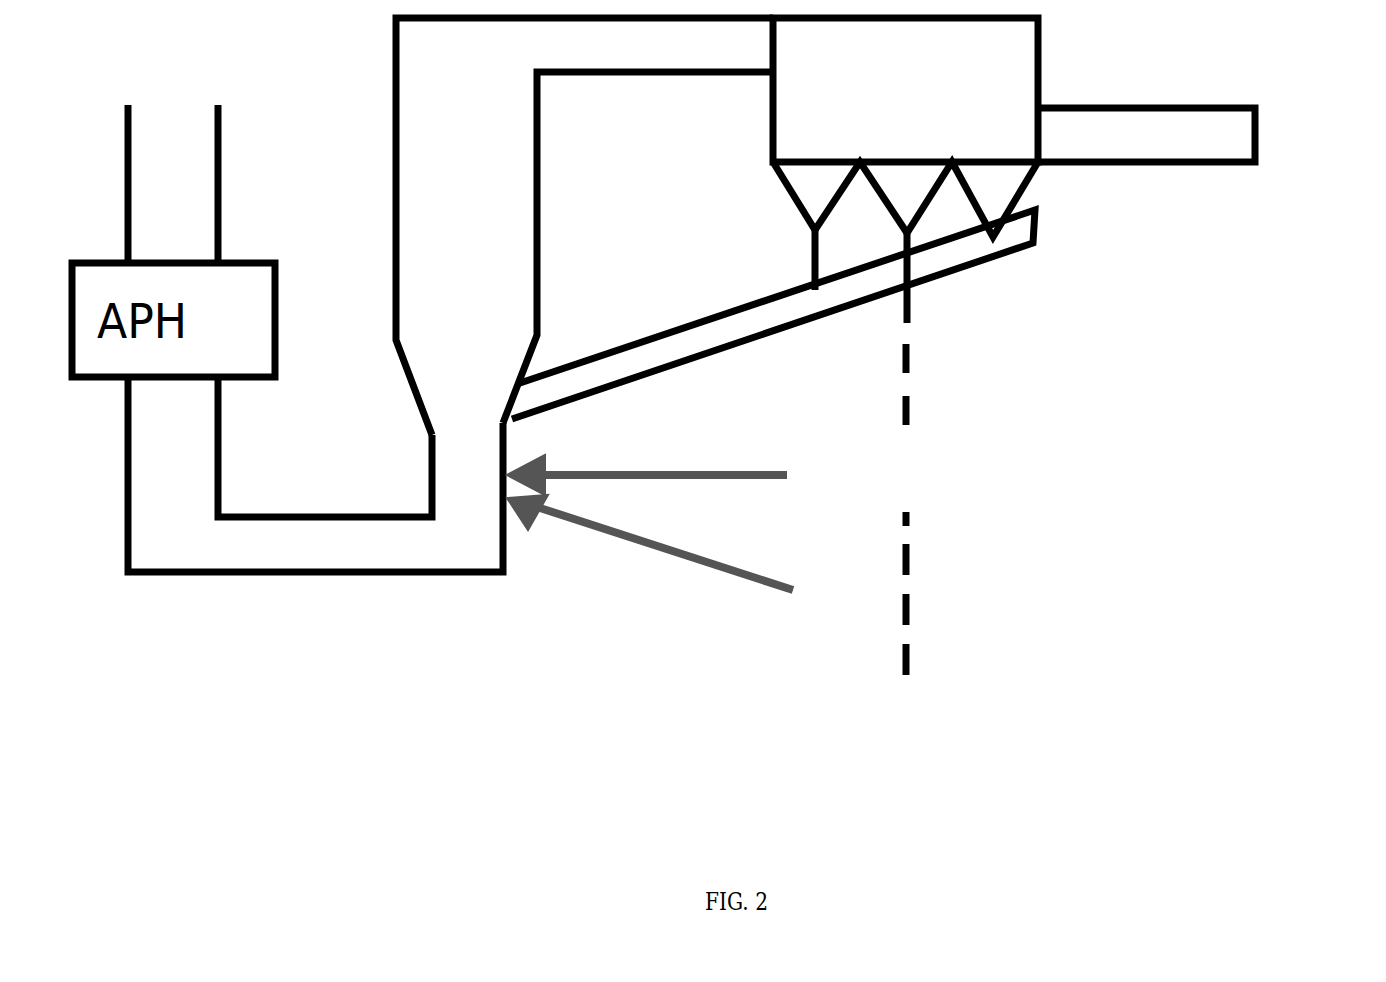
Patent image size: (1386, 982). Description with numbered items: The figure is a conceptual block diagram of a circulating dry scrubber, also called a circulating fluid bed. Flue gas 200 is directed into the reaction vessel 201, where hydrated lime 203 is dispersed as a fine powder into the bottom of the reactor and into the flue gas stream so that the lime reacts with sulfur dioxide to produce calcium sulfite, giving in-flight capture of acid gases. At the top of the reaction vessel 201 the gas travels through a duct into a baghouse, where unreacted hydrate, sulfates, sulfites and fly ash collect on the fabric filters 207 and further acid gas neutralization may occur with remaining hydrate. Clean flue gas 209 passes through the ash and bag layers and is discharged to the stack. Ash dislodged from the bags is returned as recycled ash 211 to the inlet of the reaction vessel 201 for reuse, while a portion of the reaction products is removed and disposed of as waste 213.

The flue gas 200 is at (315, 338).
The reactor 201 is at (584, 226).
The hydrated lime 203 is at (852, 519).
The particulate collection 207 is at (905, 153).
The to stack 209 is at (1212, 99).
The recirculation 211 is at (949, 314).
The byproduct waste 213 is at (1093, 504).